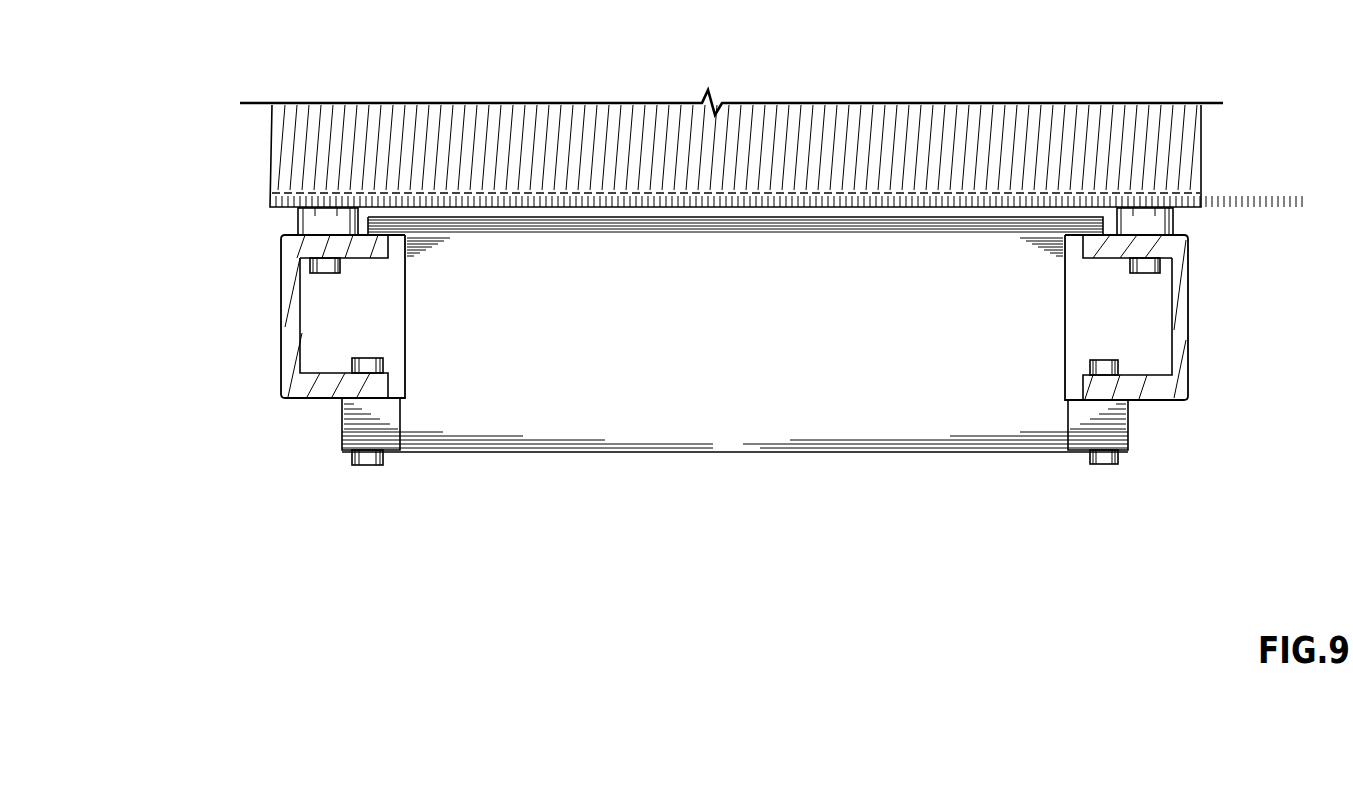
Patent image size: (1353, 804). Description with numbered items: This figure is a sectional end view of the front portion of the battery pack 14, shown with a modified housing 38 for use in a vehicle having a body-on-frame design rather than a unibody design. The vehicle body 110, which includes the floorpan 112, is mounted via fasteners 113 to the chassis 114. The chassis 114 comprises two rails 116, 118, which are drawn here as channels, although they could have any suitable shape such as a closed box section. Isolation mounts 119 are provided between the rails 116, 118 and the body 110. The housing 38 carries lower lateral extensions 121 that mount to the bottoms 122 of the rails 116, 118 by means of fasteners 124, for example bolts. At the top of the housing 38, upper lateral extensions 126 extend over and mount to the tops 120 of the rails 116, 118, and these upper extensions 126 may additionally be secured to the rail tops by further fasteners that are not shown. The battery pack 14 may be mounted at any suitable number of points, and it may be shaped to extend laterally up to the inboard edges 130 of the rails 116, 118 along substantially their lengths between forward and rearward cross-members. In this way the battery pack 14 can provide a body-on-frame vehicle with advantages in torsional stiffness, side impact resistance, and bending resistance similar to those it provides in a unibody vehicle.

The battery pack 14 is at (735, 479).
The housing 38 is at (877, 452).
The body 110 is at (1201, 165).
The floorpan 112 is at (542, 190).
The fasteners 113 is at (328, 273).
The chassis 114 is at (180, 281).
The rail 116 is at (282, 345).
The rail 118 is at (1188, 335).
The isolation mounts 119 is at (297, 232).
The tops of the rails 120 is at (358, 233).
The lower lateral extensions 121 is at (343, 430).
The bottoms of the rails 122 is at (300, 400).
The fasteners 124 is at (380, 466).
The upper lateral extensions 126 is at (398, 217).
The inboard edges 130 is at (400, 398).